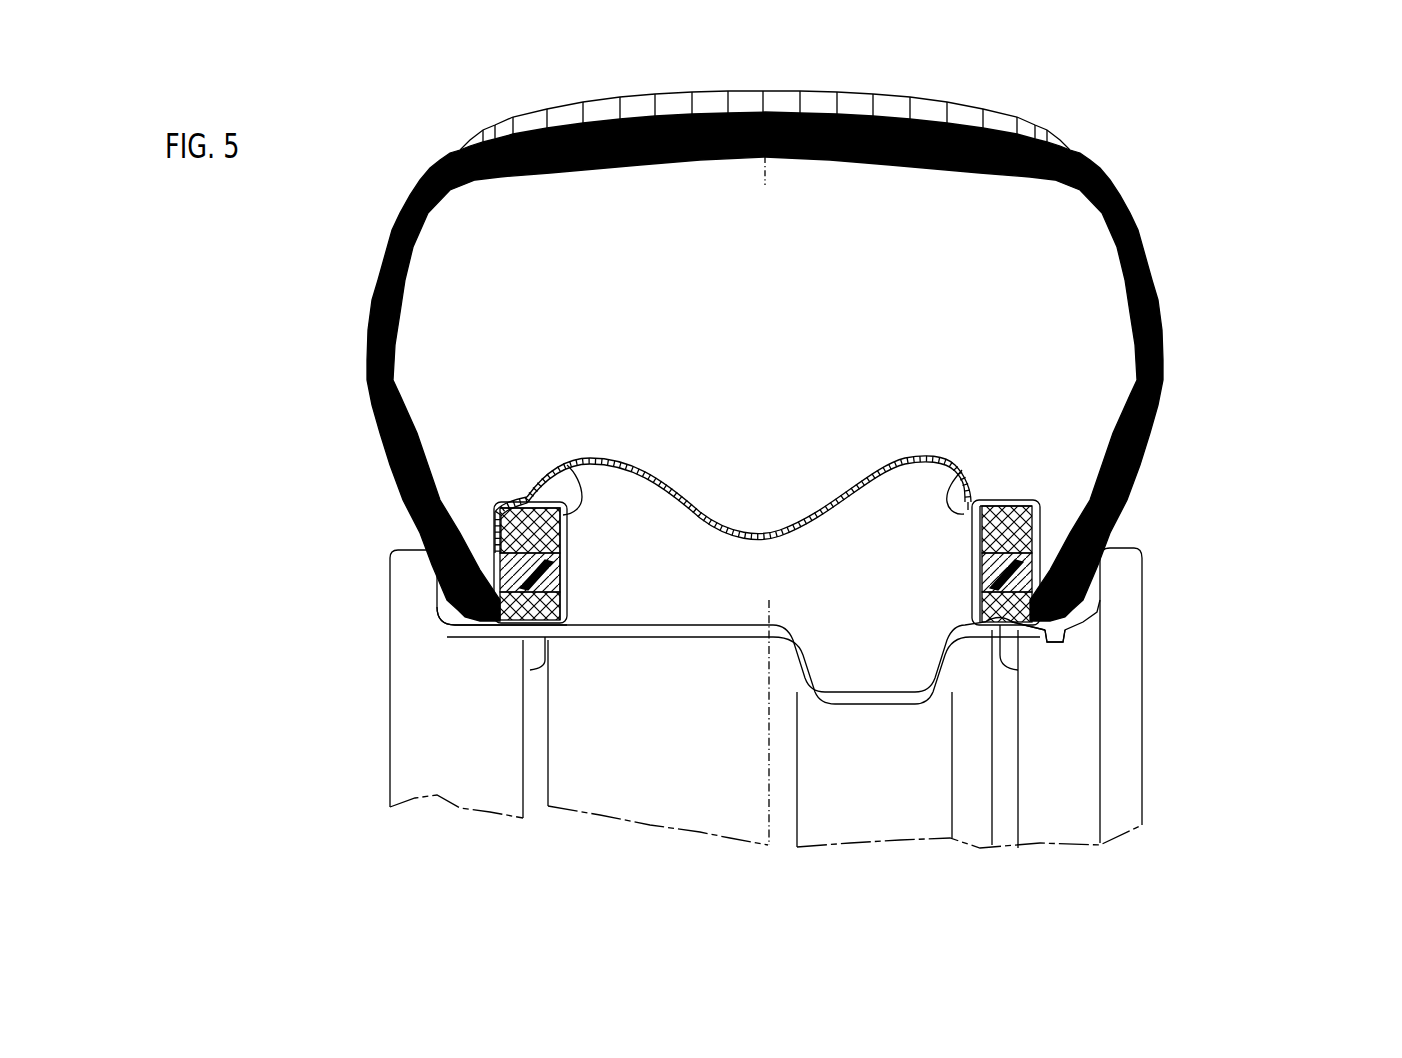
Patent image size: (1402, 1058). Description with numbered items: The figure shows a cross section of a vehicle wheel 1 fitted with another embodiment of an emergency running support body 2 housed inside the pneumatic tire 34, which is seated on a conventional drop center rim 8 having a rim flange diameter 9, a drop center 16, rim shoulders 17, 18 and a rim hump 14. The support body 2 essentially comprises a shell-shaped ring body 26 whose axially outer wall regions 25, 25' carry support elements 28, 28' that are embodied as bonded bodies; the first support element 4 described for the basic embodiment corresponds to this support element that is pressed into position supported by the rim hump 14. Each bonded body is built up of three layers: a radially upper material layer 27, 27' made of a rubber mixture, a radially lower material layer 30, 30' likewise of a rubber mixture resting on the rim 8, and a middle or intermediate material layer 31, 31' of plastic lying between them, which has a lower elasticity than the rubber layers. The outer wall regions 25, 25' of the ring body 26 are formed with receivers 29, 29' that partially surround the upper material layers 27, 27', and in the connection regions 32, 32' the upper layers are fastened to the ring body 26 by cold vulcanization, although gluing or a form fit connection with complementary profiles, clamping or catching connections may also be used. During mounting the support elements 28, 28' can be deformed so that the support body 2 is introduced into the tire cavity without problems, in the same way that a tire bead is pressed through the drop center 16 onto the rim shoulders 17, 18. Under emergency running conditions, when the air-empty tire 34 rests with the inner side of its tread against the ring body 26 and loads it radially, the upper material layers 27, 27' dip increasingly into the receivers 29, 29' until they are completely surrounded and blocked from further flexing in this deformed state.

The vehicle wheel 1 is at (1132, 177).
The emergency running support body 2 is at (853, 427).
The first support element 4 is at (445, 575).
The drop center rim 8 is at (917, 778).
The rim flange diameter 9 is at (395, 548).
The rim hump 14 is at (535, 626).
The drop center 16 is at (940, 692).
The rim shoulder 17 is at (501, 644).
The rim shoulder 18 is at (1043, 643).
The outer wall region 25 is at (325, 477).
The outer wall region 25' is at (1201, 427).
The ring body 26 is at (906, 459).
The upper material layer 27 is at (380, 562).
The upper material layer 27' is at (1174, 512).
The support element 28 is at (404, 434).
The support element 28' is at (1165, 385).
The receiver 29 is at (374, 444).
The receiver 29' is at (1159, 411).
The lower material layer 30 is at (375, 636).
The lower material layer 30' is at (946, 620).
The intermediate material layer 31 is at (583, 577).
The intermediate material layer 31' is at (945, 574).
The connection region 32 is at (578, 530).
The connection region 32' is at (946, 529).
The pneumatic tire 34 is at (1079, 155).